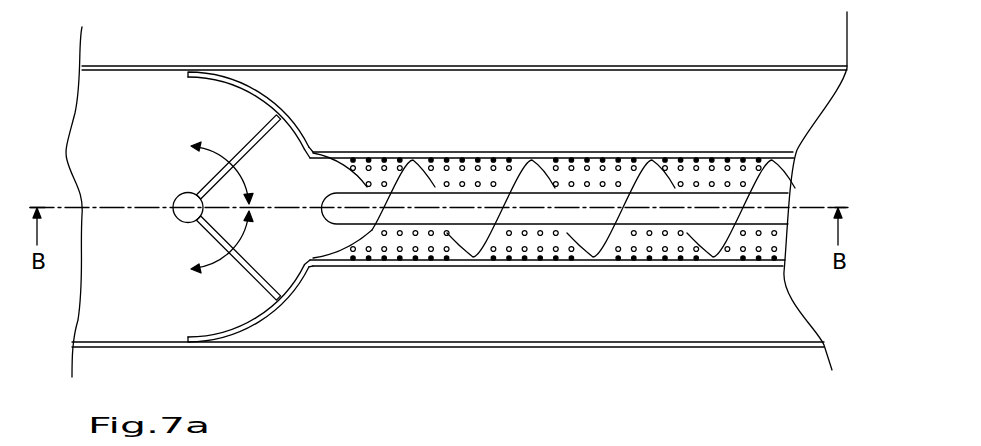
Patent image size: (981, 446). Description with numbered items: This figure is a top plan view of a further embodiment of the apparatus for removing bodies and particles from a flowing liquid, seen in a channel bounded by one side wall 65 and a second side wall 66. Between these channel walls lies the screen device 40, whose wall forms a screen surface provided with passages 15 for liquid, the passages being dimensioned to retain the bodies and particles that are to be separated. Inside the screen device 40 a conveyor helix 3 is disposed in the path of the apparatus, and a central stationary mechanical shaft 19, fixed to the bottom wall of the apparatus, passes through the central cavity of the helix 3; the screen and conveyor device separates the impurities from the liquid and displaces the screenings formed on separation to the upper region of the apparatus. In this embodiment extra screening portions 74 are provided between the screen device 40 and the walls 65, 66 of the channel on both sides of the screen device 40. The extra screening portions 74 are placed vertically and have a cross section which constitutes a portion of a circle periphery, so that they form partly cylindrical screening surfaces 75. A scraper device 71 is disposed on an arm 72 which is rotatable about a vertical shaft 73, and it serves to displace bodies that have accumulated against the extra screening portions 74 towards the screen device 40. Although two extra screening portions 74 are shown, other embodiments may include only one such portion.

The conveyor helix 3 is at (676, 170).
The passages 15 is at (420, 267).
The central stationary mechanical shaft 19 is at (445, 218).
The screen device 40 is at (537, 151).
The side wall 65 is at (601, 348).
The second side wall 66 is at (546, 66).
The scraper device 71 is at (281, 118).
The arm 72 is at (210, 178).
The vertical shaft 73 is at (175, 213).
The extra screening portions 74 is at (245, 83).
The partly cylindrical screening surfaces 75 is at (262, 90).